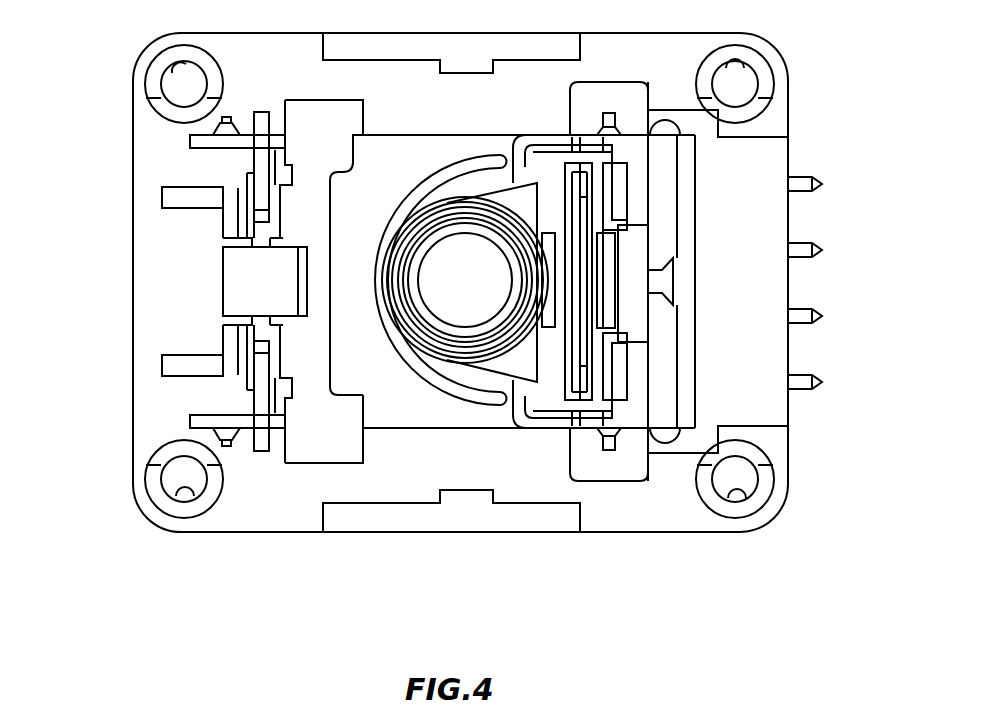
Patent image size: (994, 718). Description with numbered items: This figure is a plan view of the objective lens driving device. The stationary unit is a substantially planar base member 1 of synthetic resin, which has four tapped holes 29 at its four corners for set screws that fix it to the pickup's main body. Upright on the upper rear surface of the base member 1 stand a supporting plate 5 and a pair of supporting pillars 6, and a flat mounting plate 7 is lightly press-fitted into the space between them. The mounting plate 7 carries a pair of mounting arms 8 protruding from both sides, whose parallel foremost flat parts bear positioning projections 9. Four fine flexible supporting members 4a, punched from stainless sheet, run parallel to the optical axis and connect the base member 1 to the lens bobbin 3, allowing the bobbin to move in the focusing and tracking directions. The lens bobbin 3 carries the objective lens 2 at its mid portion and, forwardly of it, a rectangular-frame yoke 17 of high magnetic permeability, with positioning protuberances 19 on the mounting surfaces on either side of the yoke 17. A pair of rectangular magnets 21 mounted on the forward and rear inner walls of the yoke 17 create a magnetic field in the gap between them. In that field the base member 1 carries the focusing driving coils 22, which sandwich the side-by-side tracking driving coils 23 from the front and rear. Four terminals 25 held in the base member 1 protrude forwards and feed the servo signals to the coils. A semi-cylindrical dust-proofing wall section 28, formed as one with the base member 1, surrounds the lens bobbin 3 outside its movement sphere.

The base member 1 is at (133, 315).
The objective lens 2 is at (445, 250).
The lens bobbin 3 is at (505, 193).
The supporting member 4a is at (382, 135).
The supporting plate 5 is at (300, 447).
The supporting pillar 6 is at (228, 222).
The mounting plate 7 is at (225, 280).
The mounting arm 8 is at (207, 150).
The positioning projection 9 is at (228, 117).
The yoke 17 is at (557, 145).
The positioning protuberance 19 is at (613, 115).
The magnet 21 is at (608, 252).
The focusing driving coil 22 is at (592, 305).
The tracking driving coil 23 is at (587, 232).
The terminal 25 is at (800, 192).
The dust-proofing wall section 28 is at (373, 330).
The tapped hole 29 is at (178, 66).